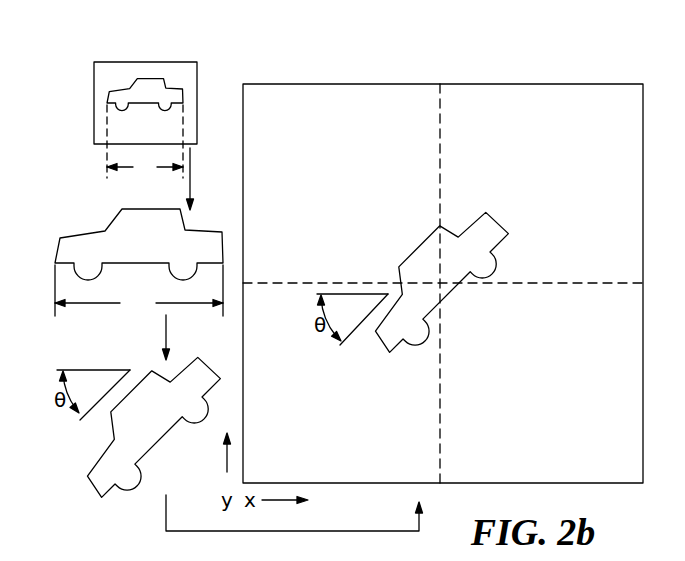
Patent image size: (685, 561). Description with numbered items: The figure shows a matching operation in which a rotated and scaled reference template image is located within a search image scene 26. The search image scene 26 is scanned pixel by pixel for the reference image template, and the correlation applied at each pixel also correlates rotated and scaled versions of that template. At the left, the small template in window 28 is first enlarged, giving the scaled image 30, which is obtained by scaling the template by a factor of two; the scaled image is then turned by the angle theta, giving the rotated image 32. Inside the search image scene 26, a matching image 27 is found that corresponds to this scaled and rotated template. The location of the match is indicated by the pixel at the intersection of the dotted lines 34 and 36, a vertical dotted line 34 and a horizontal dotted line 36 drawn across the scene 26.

The search image scene 26 is at (643, 438).
The matching image 27 is at (382, 346).
The vehicle template window 28 is at (146, 62).
The scaled image 30 is at (105, 231).
The rotated image 32 is at (92, 482).
The dotted line 34 is at (442, 155).
The dotted line 36 is at (544, 283).